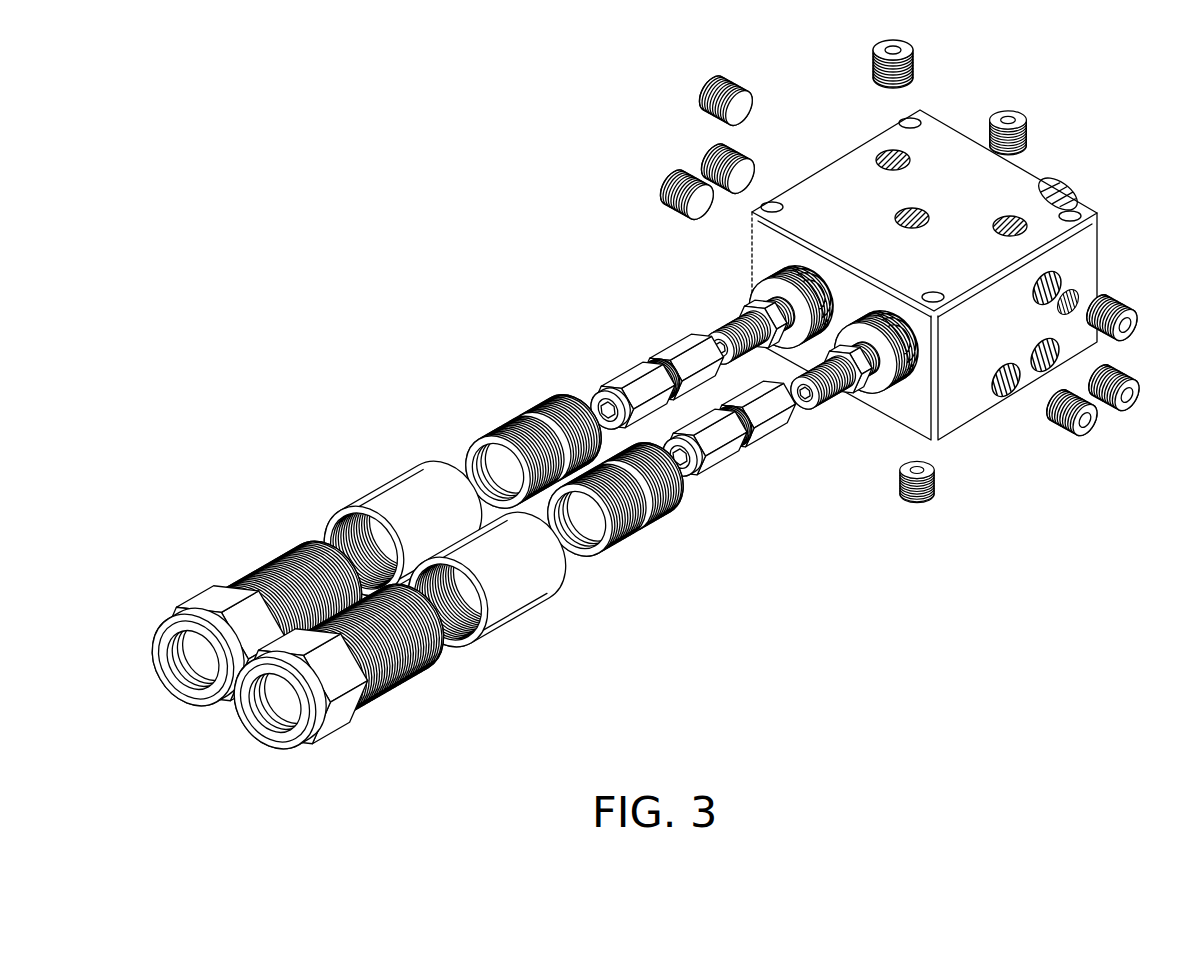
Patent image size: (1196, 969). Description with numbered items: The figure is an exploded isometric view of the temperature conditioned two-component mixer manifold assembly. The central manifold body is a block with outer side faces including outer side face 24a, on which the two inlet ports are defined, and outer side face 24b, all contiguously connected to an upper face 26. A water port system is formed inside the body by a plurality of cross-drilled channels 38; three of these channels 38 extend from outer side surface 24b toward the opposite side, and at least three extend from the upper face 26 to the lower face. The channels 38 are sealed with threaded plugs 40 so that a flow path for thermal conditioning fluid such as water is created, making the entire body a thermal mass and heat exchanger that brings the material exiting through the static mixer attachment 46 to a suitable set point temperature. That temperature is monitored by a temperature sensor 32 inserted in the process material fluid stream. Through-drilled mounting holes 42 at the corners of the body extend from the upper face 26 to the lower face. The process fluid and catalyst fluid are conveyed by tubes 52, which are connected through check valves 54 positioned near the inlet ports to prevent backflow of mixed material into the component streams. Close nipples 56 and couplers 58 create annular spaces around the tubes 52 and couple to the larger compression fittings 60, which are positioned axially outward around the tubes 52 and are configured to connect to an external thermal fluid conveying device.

The outer side face 24a is at (905, 398).
The outer side face 24b is at (955, 410).
The upper face 26 is at (1000, 183).
The temperature sensor 32 is at (1075, 300).
The cross-drilled channels 38 is at (885, 152).
The plugs 40 is at (708, 103).
The drilled holes 42 is at (919, 120).
The static mixer attachment 46 is at (1070, 185).
The tubes 52 is at (735, 322).
The check valves 54 is at (632, 378).
The close nipples 56 is at (515, 428).
The couplers 58 is at (400, 490).
The compression fittings 60 is at (255, 580).